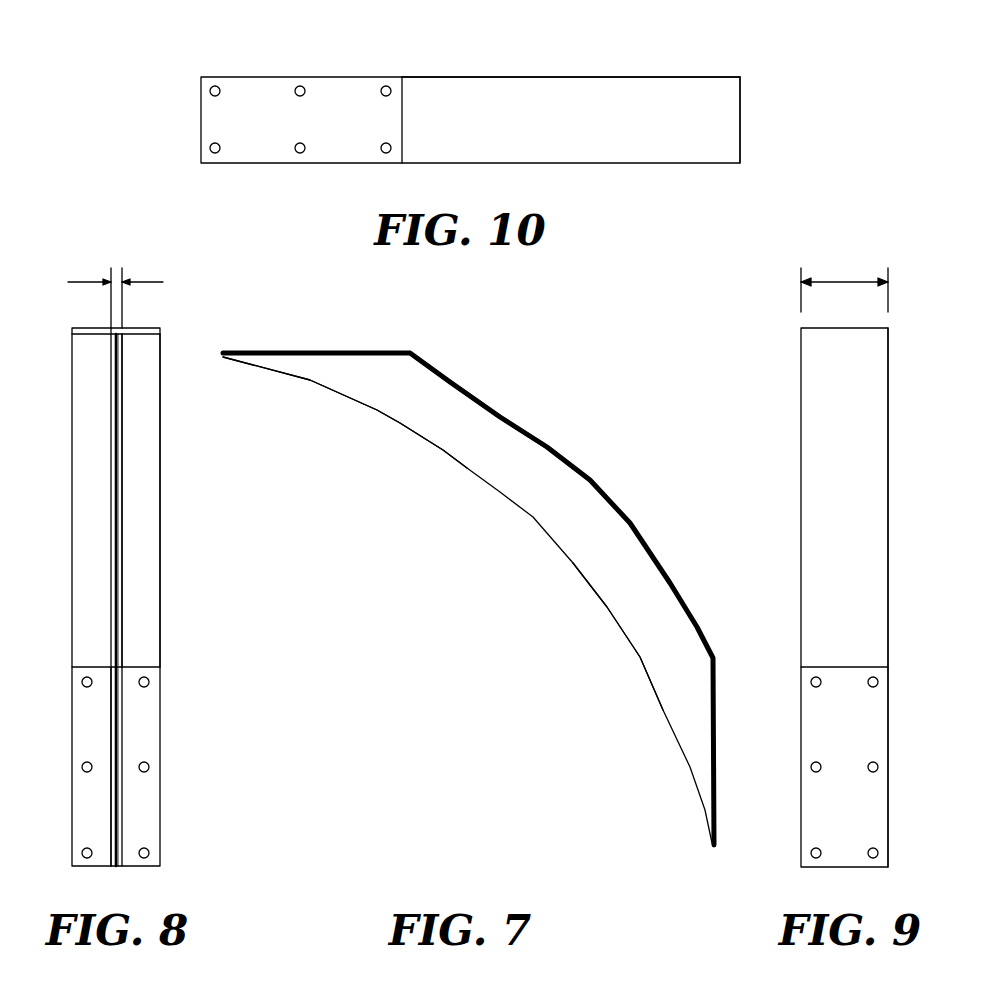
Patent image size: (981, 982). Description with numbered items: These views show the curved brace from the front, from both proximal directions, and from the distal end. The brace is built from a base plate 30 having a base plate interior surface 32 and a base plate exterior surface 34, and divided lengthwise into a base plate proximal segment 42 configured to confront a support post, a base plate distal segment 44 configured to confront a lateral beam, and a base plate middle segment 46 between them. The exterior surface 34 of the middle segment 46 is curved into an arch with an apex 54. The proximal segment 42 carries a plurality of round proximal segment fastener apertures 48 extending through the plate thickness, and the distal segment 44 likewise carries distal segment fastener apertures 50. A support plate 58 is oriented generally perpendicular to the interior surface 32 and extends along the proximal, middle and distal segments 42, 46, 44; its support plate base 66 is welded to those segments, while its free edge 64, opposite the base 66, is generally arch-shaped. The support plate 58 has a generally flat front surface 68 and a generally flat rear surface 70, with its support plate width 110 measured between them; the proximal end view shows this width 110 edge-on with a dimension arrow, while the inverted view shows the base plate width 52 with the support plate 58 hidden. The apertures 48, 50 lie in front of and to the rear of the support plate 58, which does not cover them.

In FIG. 7, the base plate 30 is at (628, 522).
In FIG. 8, the base plate 30 is at (147, 502).
In FIG. 10, the base plate 30 is at (518, 165).
In FIG. 8, the base plate interior surface 32 is at (147, 592).
In FIG. 9, the base plate exterior surface 34 is at (866, 448).
In FIG. 10, the base plate exterior surface 34 is at (623, 145).
In FIG. 8, the base plate proximal segment 42 is at (152, 742).
In FIG. 9, the base plate proximal segment 42 is at (866, 724).
In FIG. 10, the base plate distal segment 44 is at (252, 148).
In FIG. 8, the base plate middle segment 46 is at (150, 634).
In FIG. 9, the base plate middle segment 46 is at (818, 390).
In FIG. 10, the base plate middle segment 46 is at (515, 90).
In FIG. 8, the proximal segment fastener apertures 48 is at (85, 685).
In FIG. 9, the proximal segment fastener apertures 48 is at (814, 686).
In FIG. 10, the distal segment fastener apertures 50 is at (220, 90).
In FIG. 9, the base plate width 52 is at (836, 280).
In FIG. 7, the apex 54 is at (590, 480).
In FIG. 7, the support plate 58 is at (560, 505).
In FIG. 8, the support plate 58 is at (120, 427).
In FIG. 7, the free edge 64 is at (468, 470).
In FIG. 8, the free edge 64 is at (120, 826).
In FIG. 7, the support plate base 66 is at (512, 445).
In FIG. 7, the front surface 68 is at (625, 610).
In FIG. 8, the front surface 68 is at (121, 535).
In FIG. 8, the rear surface 70 is at (111, 470).
In FIG. 8, the support plate width 110 is at (143, 280).